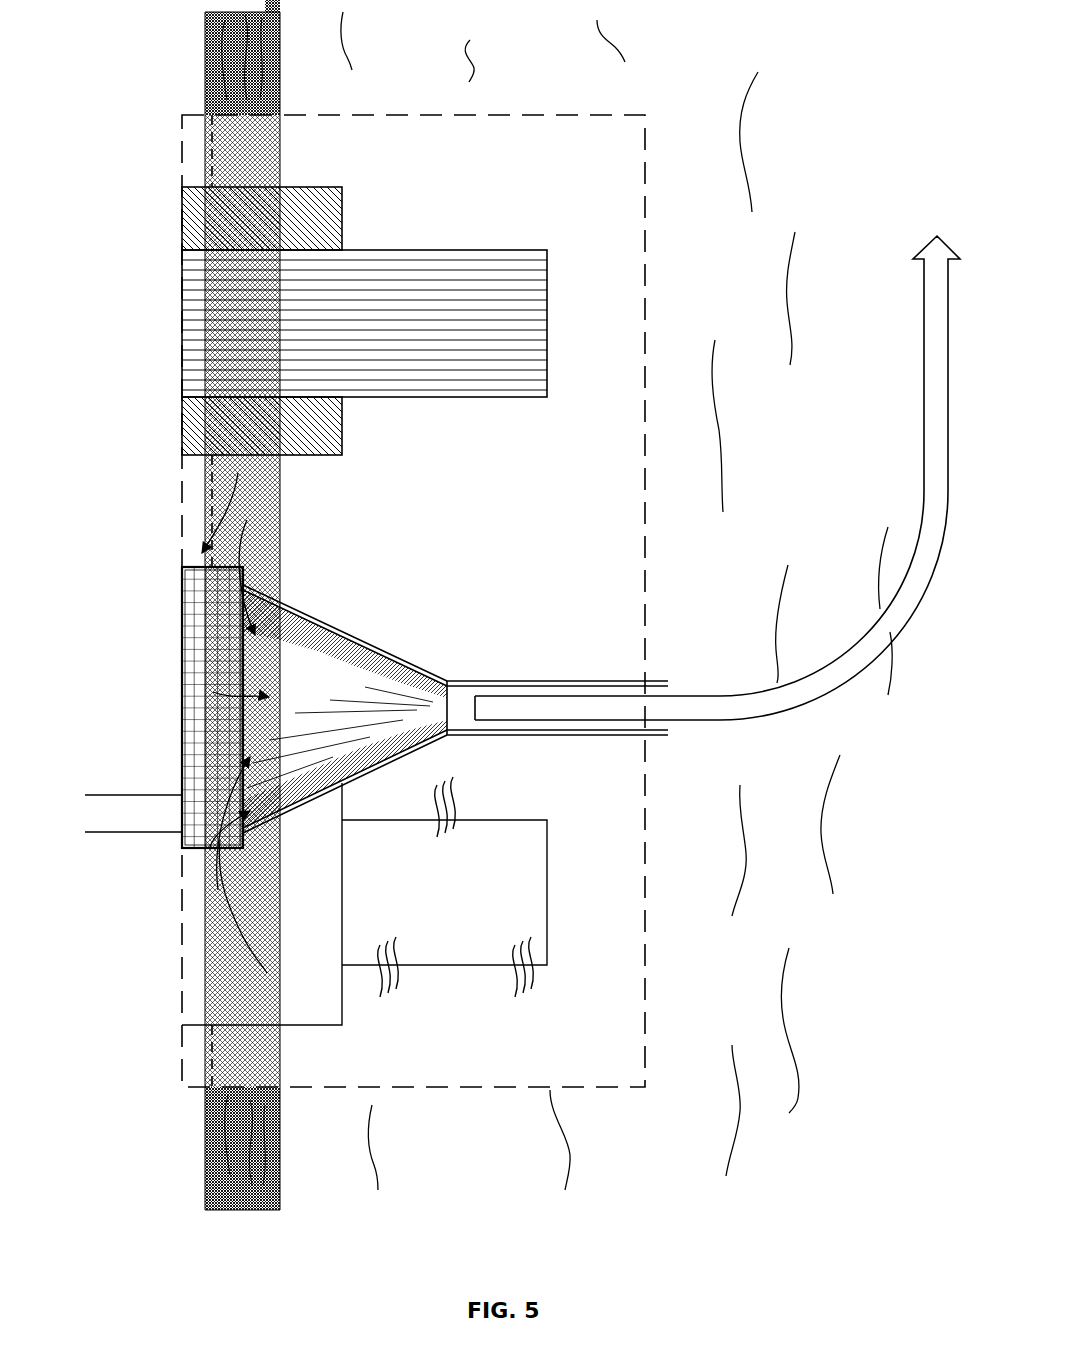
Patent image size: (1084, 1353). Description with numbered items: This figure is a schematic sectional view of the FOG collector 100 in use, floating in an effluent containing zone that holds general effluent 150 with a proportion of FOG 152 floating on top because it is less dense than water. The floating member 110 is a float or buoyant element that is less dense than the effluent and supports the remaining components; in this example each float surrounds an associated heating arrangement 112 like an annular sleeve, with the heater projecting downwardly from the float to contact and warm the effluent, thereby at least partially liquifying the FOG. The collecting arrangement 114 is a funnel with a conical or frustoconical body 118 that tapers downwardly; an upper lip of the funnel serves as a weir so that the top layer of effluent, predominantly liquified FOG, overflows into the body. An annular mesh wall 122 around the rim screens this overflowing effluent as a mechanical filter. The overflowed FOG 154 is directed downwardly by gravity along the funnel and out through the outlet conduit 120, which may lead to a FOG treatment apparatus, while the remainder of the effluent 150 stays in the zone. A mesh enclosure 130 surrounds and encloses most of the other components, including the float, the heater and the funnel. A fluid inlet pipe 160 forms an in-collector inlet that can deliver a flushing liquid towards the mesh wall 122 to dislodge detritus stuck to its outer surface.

The FOG collector 100 is at (100, 136).
The floating member 110 is at (342, 210).
The heating arrangement 112 is at (478, 251).
The collecting arrangement 114 is at (413, 700).
The frustoconical body 118 is at (368, 643).
The outlet conduit 120 is at (514, 680).
The mesh wall 122 is at (182, 608).
The mesh enclosure 130 is at (645, 486).
The effluent 150 is at (737, 66).
The FOG 152 is at (280, 86).
The overflowed FOG 154 is at (324, 644).
The fluid inlet pipe 160 is at (135, 835).